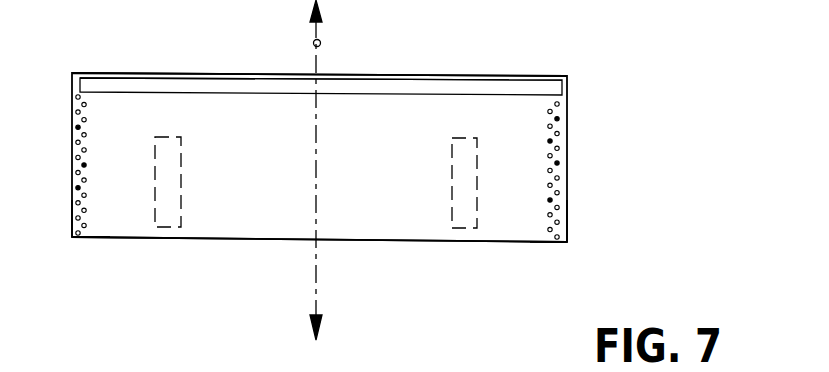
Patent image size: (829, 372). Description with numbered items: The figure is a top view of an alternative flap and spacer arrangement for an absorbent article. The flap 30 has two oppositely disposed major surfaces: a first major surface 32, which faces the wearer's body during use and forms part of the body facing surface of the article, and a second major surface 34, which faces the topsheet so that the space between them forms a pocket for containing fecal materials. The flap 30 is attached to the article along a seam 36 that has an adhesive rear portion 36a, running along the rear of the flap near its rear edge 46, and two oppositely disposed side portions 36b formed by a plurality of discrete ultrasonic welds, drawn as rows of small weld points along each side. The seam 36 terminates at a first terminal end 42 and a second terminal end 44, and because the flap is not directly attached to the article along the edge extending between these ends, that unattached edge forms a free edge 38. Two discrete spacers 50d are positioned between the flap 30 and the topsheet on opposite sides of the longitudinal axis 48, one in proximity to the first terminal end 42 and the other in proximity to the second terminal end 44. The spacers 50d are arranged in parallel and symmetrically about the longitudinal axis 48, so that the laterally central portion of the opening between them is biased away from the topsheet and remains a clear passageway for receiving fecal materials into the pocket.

The flap 30 is at (530, 140).
The first major surface 32 is at (372, 218).
The second major surface 34 is at (232, 213).
The seam 36 is at (275, 87).
The rear portion 36a is at (193, 86).
The side portions 36b is at (72, 167).
The free edge 38 is at (420, 243).
The first terminal end 42 is at (84, 238).
The second terminal end 44 is at (555, 241).
The rear edge 46 is at (385, 75).
The longitudinal axis 48 is at (321, 42).
The spacers 50d is at (162, 228).